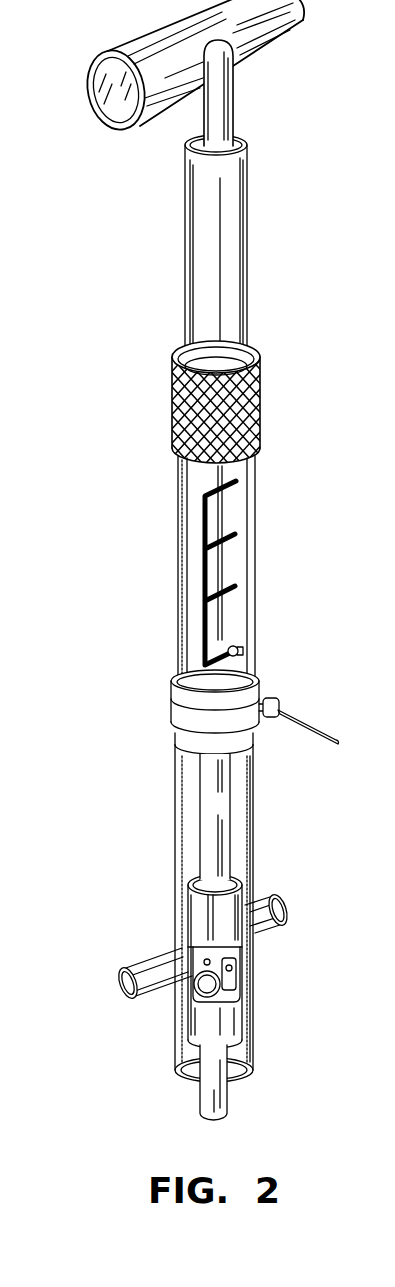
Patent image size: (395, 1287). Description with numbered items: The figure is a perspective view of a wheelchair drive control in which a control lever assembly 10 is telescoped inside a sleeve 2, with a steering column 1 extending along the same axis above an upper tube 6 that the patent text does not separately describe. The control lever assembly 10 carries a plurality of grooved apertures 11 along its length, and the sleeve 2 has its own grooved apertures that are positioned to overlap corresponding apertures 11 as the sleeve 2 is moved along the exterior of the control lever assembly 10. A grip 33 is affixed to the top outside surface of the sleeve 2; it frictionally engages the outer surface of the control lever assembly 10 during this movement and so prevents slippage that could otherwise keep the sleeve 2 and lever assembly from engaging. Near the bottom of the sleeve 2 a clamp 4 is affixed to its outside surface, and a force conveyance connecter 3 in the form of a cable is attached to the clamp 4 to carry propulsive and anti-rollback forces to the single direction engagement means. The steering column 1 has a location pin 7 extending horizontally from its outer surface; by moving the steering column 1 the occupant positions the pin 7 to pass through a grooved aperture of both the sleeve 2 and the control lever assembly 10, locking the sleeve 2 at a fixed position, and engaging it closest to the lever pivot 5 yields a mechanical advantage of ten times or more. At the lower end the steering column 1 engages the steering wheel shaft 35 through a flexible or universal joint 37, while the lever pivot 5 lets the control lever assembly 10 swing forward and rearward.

The control lever assembly 10 is at (96, 404).
The steering column 1 is at (230, 113).
The upper tube 6 is at (228, 251).
The grip 33 is at (257, 395).
The sleeve 2 is at (235, 578).
The grooved apertures 11 is at (197, 598).
The location pin 7 is at (240, 647).
The clamp 4 is at (268, 698).
The force conveyance connecter 3 is at (307, 726).
The flexible or universal joint 37 is at (240, 998).
The lever pivot 5 is at (118, 991).
The steering wheel shaft 35 is at (230, 1098).